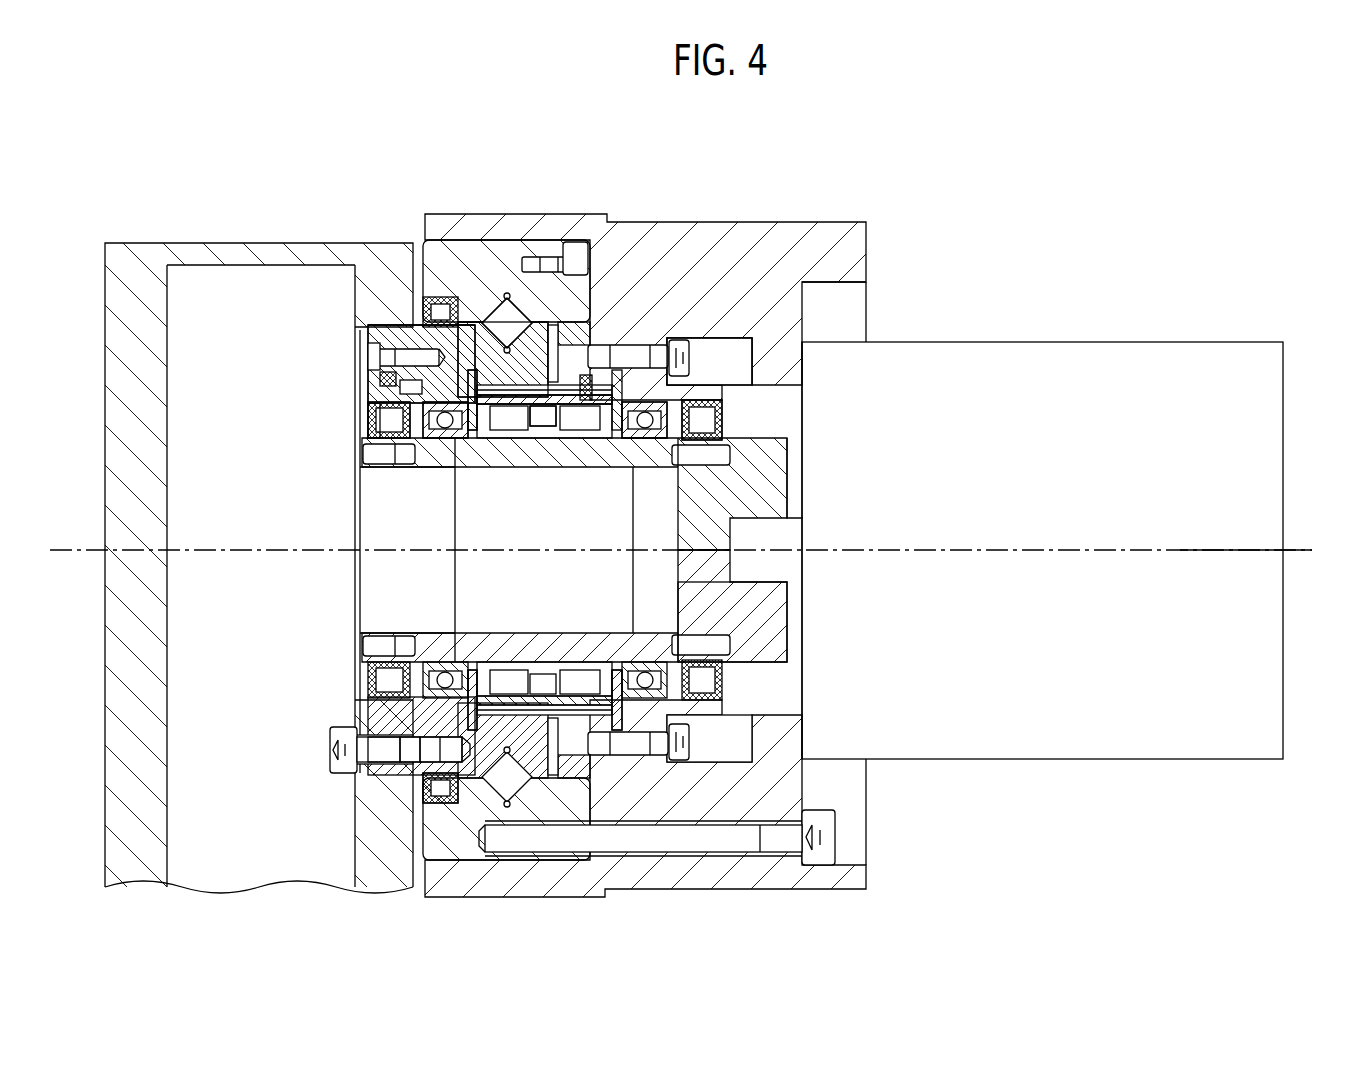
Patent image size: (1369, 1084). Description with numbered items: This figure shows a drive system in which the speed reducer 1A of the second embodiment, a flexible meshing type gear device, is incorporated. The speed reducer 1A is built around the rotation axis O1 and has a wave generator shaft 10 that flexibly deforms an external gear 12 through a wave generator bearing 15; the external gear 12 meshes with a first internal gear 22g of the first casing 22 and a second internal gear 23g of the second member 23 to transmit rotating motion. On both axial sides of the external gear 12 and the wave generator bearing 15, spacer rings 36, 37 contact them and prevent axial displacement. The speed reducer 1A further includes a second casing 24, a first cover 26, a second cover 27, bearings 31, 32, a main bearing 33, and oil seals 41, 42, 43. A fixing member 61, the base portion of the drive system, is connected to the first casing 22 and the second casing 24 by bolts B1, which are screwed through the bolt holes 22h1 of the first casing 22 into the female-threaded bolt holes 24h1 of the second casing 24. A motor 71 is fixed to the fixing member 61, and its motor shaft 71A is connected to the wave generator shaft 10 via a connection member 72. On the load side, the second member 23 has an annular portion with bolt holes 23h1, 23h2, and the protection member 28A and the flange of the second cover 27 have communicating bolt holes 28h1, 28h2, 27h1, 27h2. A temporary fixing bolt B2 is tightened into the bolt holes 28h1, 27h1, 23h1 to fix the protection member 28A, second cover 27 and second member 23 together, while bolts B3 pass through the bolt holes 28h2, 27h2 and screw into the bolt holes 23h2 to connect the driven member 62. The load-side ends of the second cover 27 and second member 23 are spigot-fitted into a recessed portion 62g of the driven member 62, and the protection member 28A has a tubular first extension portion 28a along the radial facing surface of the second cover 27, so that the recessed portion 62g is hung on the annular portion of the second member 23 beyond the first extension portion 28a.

The speed reducer 1A is at (738, 684).
The wave generator shaft 10 is at (372, 583).
The external gear 12 is at (527, 402).
The wave generator bearing 15 is at (543, 430).
The first casing 22 is at (576, 252).
The first internal gear 22g is at (592, 378).
The bolt hole 22h1 is at (575, 848).
The second member 23 is at (480, 370).
The second internal gear 23g is at (471, 319).
The bolt hole 23h1 is at (367, 397).
The bolt hole 23h2 is at (417, 763).
The second casing 24 is at (534, 262).
The bolt hole 24h1 is at (505, 846).
The first cover 26 is at (690, 387).
The second cover 27 is at (367, 412).
The bolt hole 27h1 is at (367, 382).
The bolt hole 27h2 is at (375, 747).
The protection member 28A is at (367, 328).
The first extension portion 28a is at (372, 326).
The bolt hole 28h1 is at (365, 348).
The bolt hole 28h2 is at (402, 748).
The bearing 31 is at (650, 436).
The bearing 32 is at (447, 425).
The main bearing 33 is at (472, 372).
The spacer ring 36 is at (617, 672).
The spacer ring 37 is at (474, 672).
The oil seal 41 is at (722, 418).
The oil seal 42 is at (368, 427).
The oil seal 43 is at (440, 803).
The fixing member 61 is at (822, 235).
The driven member 62 is at (223, 242).
The recessed portion 62g is at (373, 745).
The motor 71 is at (1195, 355).
The motor shaft 71A is at (798, 535).
The connection member 72 is at (788, 458).
The bolt B1 is at (760, 842).
The temporary fixing bolt B2 is at (395, 357).
The bolt B3 is at (328, 765).
The rotation axis O1 is at (1266, 550).